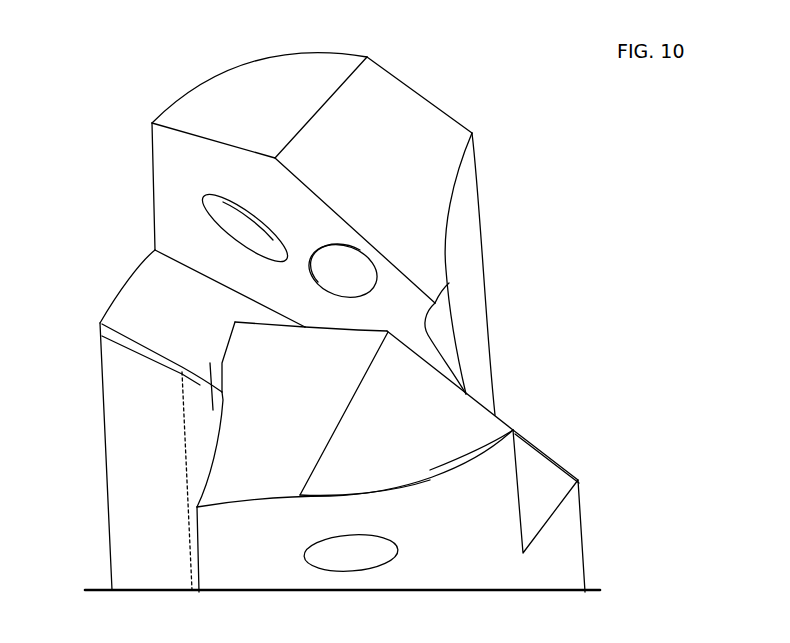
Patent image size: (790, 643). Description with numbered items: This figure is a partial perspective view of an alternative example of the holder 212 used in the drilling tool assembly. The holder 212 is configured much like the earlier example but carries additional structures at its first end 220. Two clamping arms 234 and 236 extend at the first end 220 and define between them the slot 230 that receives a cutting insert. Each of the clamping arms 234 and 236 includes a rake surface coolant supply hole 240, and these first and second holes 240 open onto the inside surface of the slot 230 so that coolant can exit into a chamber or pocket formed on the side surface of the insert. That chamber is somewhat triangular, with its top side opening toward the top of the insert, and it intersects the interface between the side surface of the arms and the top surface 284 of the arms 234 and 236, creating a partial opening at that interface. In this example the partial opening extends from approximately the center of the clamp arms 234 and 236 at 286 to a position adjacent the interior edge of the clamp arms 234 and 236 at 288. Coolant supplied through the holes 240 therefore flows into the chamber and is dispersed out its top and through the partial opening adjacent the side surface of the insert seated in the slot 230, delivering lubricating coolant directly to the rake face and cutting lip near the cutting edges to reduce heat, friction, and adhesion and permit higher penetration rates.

The holder 212 is at (461, 58).
The first end 220 is at (457, 115).
The clamping arm 234 is at (283, 58).
The slot 230 is at (150, 292).
The rake surface coolant supply hole 240 is at (363, 278).
The position adjacent the interior edge of the clamp arms 288 is at (263, 325).
The center of the clamp arms 286 is at (357, 330).
The top surface 284 is at (473, 423).
The clamping arm 236 is at (427, 450).